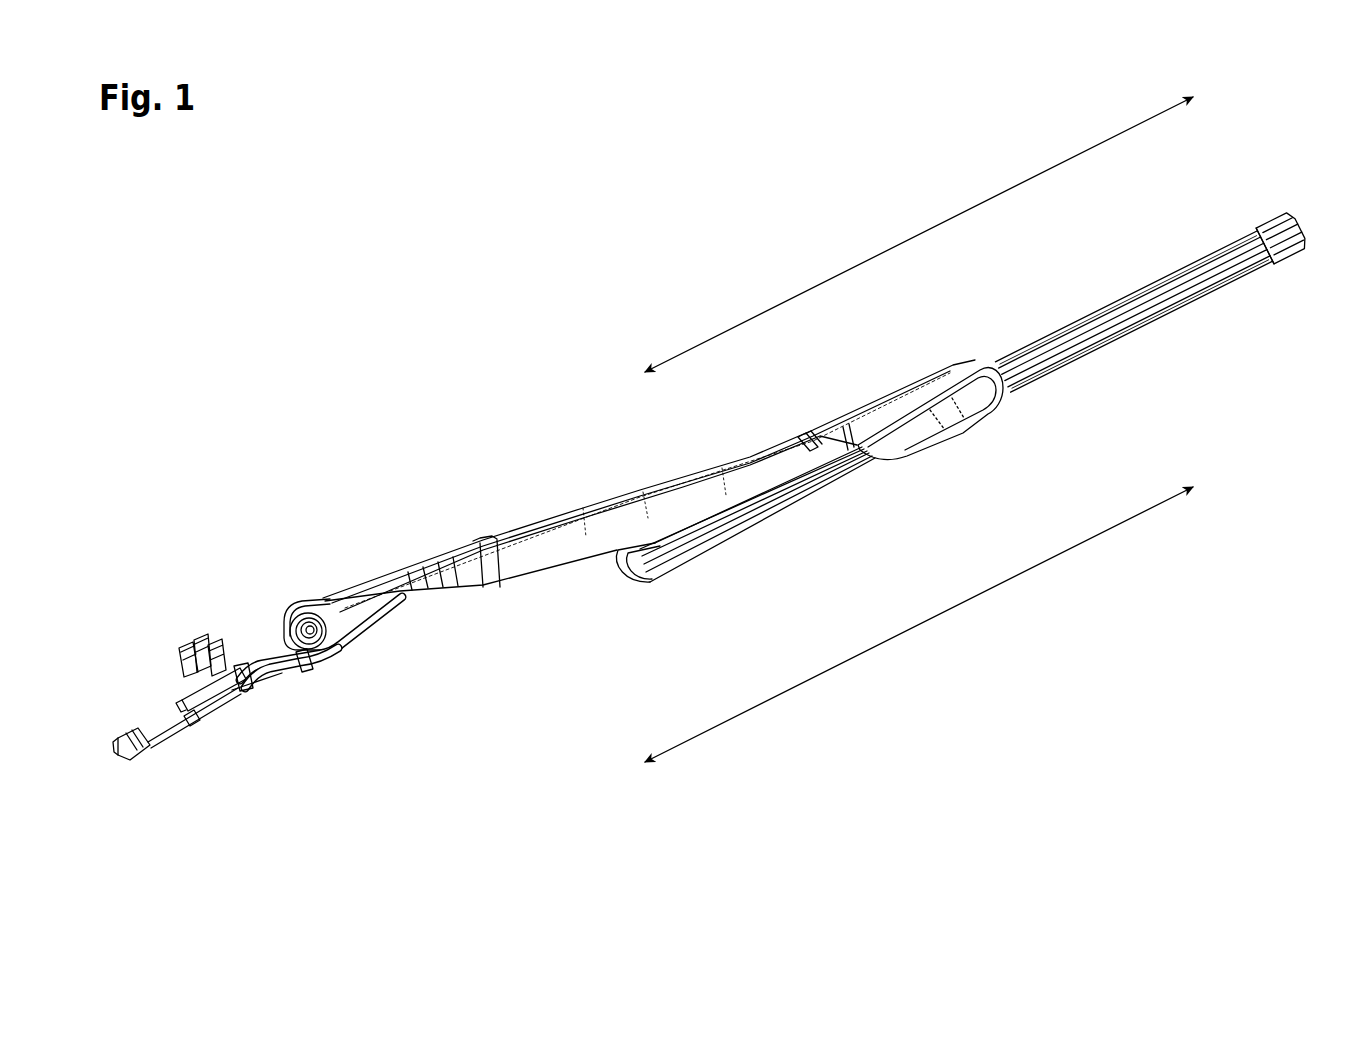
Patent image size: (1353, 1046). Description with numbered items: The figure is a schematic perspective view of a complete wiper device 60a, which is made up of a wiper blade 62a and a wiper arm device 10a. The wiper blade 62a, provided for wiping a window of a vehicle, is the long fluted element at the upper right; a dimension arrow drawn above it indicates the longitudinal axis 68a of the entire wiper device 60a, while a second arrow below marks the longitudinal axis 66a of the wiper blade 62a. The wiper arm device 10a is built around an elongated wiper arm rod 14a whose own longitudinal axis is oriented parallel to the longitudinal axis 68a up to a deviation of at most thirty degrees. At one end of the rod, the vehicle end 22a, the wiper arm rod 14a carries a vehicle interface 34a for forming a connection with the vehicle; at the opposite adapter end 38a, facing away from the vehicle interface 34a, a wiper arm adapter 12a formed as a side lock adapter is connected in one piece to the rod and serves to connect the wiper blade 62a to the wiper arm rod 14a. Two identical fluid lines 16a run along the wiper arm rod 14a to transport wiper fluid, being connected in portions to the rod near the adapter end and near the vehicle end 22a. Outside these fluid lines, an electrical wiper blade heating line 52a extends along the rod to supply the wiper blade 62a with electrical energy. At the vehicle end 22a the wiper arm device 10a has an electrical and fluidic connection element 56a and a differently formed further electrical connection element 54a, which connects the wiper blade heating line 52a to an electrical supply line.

The wiper arm device 10a is at (1077, 260).
The wiper arm adapter 12a is at (927, 432).
The wiper arm rod 14a is at (497, 540).
The fluid line 16a is at (330, 642).
The vehicle end 22a is at (305, 573).
The vehicle interface 34a is at (272, 583).
The adapter end 38a is at (813, 410).
The electrical wiper blade heating line 52a is at (272, 700).
The further electrical connection element 54a is at (142, 758).
The electrical and fluidic connection element 56a is at (180, 610).
The wiper device 60a is at (1151, 302).
The wiper blade 62a is at (1163, 237).
The longitudinal axis 66a is at (878, 650).
The longitudinal axis 68a is at (722, 333).